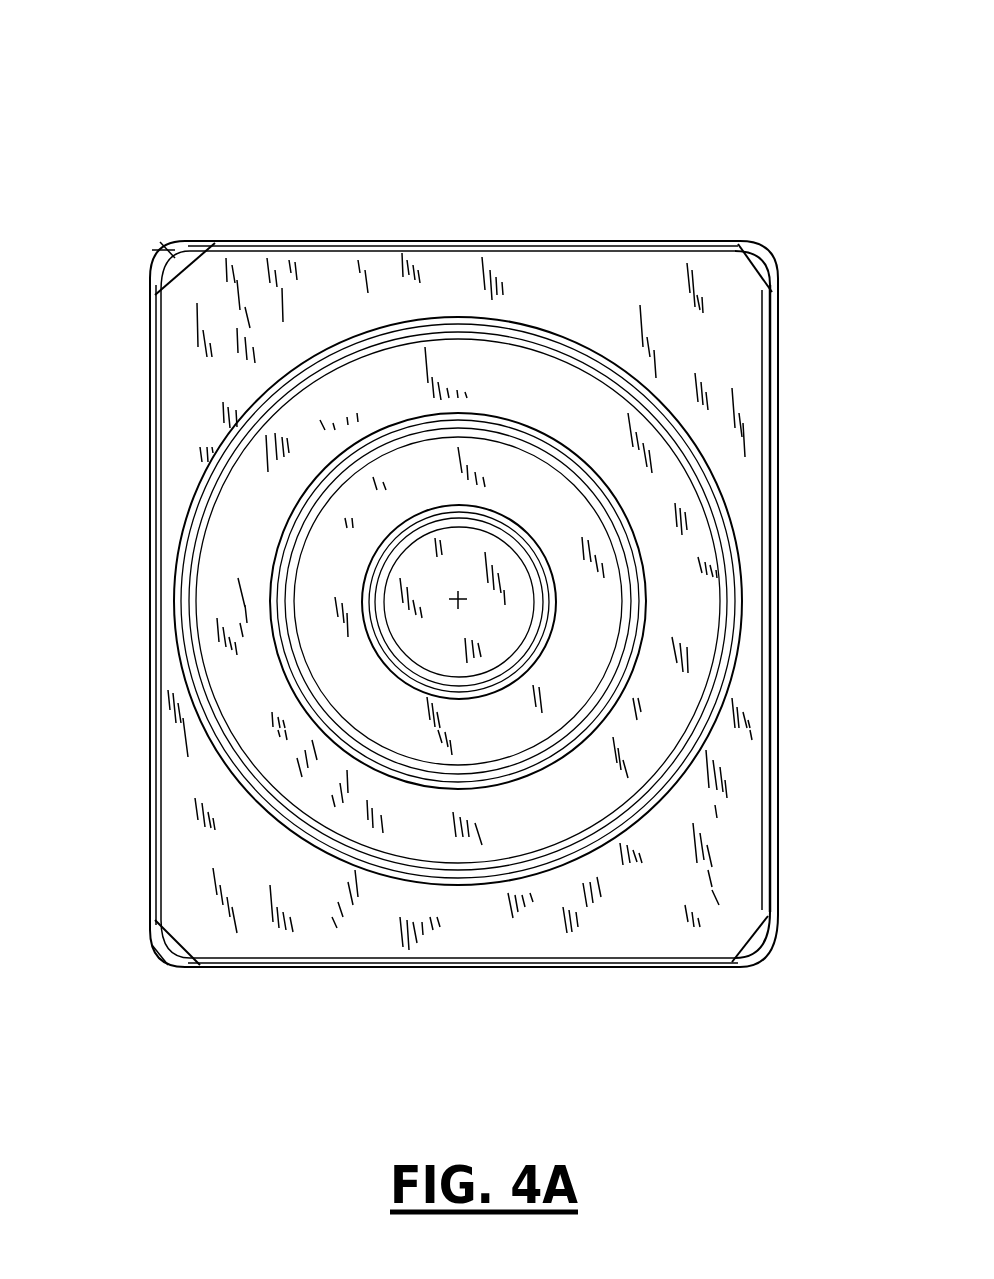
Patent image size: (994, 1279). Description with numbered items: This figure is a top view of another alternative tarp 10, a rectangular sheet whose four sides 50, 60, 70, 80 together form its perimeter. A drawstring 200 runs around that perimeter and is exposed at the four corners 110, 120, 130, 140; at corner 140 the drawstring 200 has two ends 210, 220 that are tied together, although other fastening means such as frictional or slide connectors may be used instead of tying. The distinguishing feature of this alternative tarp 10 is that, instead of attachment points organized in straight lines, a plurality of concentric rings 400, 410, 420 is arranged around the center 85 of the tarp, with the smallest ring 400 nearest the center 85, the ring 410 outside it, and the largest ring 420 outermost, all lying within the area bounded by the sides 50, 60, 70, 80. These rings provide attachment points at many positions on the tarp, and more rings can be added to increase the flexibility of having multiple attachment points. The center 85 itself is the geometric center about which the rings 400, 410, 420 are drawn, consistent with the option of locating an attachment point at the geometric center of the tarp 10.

The tarp 10 is at (622, 118).
The side 50 is at (462, 242).
The side 60 is at (778, 497).
The side 70 is at (663, 966).
The side 80 is at (148, 617).
The center 85 is at (465, 608).
The corner 110 is at (750, 242).
The corner 120 is at (772, 935).
The corner 130 is at (188, 966).
The corner 140 is at (192, 250).
The drawstring 200 is at (157, 955).
The end 210 is at (170, 248).
The end 220 is at (165, 250).
The concentric ring 400 is at (496, 518).
The concentric ring 410 is at (505, 433).
The concentric ring 420 is at (555, 340).